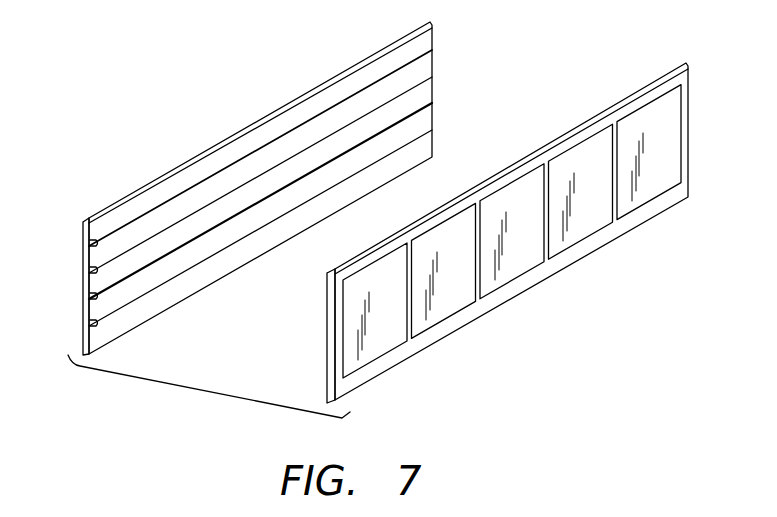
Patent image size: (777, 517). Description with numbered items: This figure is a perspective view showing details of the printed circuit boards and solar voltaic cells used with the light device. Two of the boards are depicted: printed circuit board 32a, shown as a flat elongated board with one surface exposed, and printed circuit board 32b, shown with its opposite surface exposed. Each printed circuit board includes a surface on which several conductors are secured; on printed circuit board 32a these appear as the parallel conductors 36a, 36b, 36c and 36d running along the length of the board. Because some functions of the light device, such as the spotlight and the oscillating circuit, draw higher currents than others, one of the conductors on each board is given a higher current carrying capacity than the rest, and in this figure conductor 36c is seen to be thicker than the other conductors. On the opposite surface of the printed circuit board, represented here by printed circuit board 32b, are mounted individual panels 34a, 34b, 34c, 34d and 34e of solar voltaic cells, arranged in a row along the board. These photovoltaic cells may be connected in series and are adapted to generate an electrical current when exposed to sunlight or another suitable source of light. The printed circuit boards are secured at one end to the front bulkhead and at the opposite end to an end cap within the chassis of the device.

The printed circuit board 32a is at (213, 147).
The printed circuit board 32b is at (518, 163).
The panel of solar voltaic cells 34a is at (388, 352).
The panel of solar voltaic cells 34b is at (453, 312).
The panel of solar voltaic cells 34c is at (515, 275).
The panel of solar voltaic cells 34d is at (580, 238).
The panel of solar voltaic cells 34e is at (653, 195).
The conductor 36a is at (96, 241).
The conductor 36b is at (96, 268).
The conductor 36c is at (96, 294).
The conductor 36d is at (96, 321).